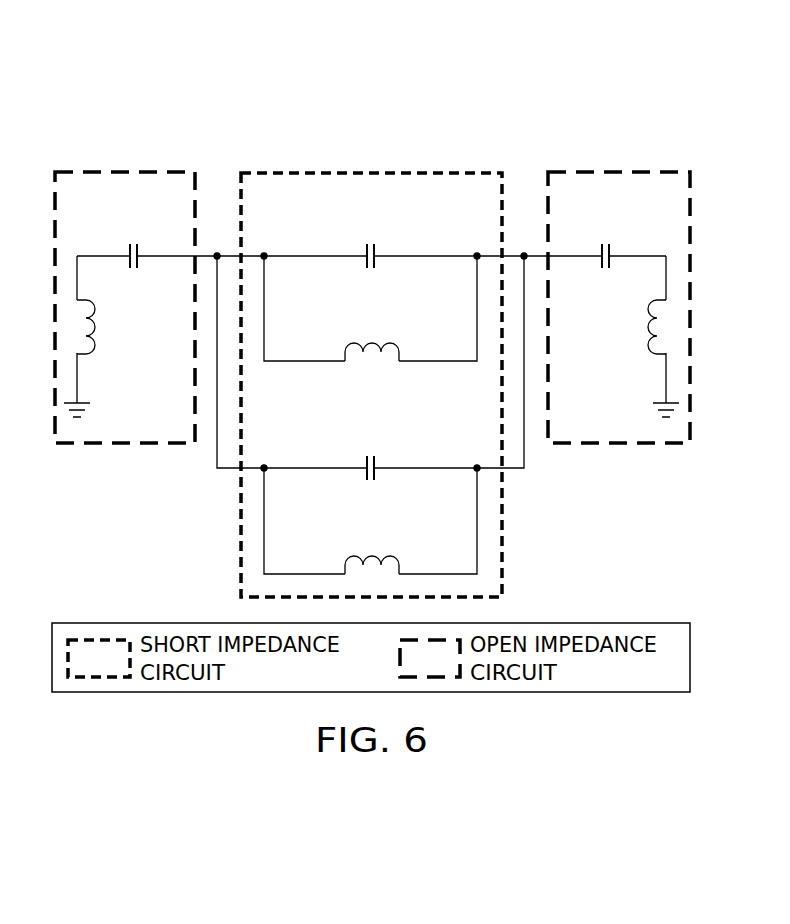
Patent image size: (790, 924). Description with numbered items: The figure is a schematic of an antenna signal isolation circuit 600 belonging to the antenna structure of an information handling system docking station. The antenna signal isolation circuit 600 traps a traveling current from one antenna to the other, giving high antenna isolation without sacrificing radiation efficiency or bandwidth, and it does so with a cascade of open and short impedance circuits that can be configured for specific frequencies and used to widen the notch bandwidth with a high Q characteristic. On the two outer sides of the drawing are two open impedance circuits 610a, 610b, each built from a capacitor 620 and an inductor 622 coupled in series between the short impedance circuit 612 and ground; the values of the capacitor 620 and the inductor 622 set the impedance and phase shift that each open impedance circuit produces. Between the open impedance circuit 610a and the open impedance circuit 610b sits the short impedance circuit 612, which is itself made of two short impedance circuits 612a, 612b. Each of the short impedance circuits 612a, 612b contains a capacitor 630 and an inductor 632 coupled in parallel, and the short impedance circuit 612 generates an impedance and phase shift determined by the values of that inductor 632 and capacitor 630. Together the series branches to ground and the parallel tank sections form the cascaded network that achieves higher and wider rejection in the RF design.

The antenna signal isolation circuit 600 is at (252, 88).
The open impedance circuit 610a is at (110, 445).
The open impedance circuit 610b is at (633, 445).
The short impedance circuit 612 is at (238, 525).
The short impedance circuit 612a is at (312, 377).
The short impedance circuit 612b is at (424, 455).
The capacitor 620 is at (136, 242).
The inductor 622 is at (95, 327).
The capacitor 630 is at (370, 242).
The inductor 632 is at (372, 342).